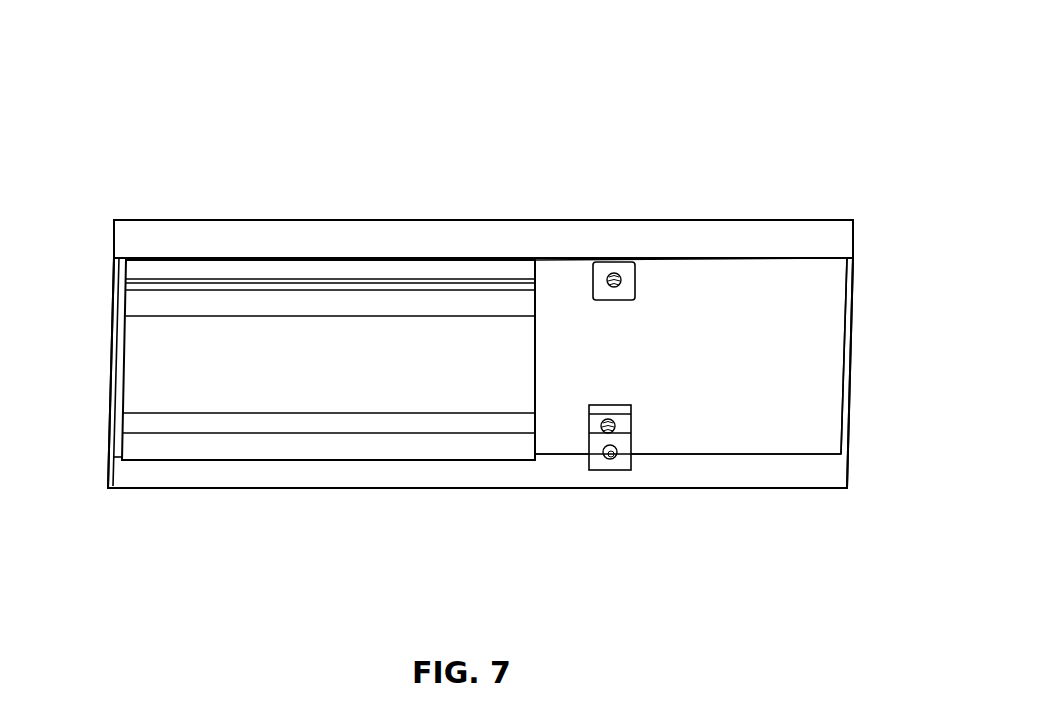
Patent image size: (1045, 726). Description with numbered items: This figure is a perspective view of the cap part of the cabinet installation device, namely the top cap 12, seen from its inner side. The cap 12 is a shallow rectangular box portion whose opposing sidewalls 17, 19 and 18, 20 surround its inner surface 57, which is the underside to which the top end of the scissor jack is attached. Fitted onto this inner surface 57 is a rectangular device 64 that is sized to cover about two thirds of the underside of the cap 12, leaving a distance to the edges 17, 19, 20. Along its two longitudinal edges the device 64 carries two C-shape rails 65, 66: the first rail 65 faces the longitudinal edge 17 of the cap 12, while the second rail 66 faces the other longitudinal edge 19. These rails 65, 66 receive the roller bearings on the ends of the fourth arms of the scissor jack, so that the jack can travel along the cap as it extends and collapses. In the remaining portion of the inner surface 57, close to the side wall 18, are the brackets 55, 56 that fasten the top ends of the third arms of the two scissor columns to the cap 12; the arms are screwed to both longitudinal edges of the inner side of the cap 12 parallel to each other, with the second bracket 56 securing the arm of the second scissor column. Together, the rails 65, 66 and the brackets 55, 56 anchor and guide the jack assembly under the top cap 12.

The top cap 12 is at (709, 121).
The sidewall 19 is at (653, 222).
The sidewall 20 is at (108, 362).
The sidewall 18 is at (853, 302).
The sidewall 17 is at (483, 490).
The inner surface 57 is at (785, 372).
The rectangular device 64 is at (157, 370).
The second rail 66 is at (258, 280).
The first rail 65 is at (215, 462).
The second bracket 56 is at (630, 288).
The bracket 55 is at (623, 442).